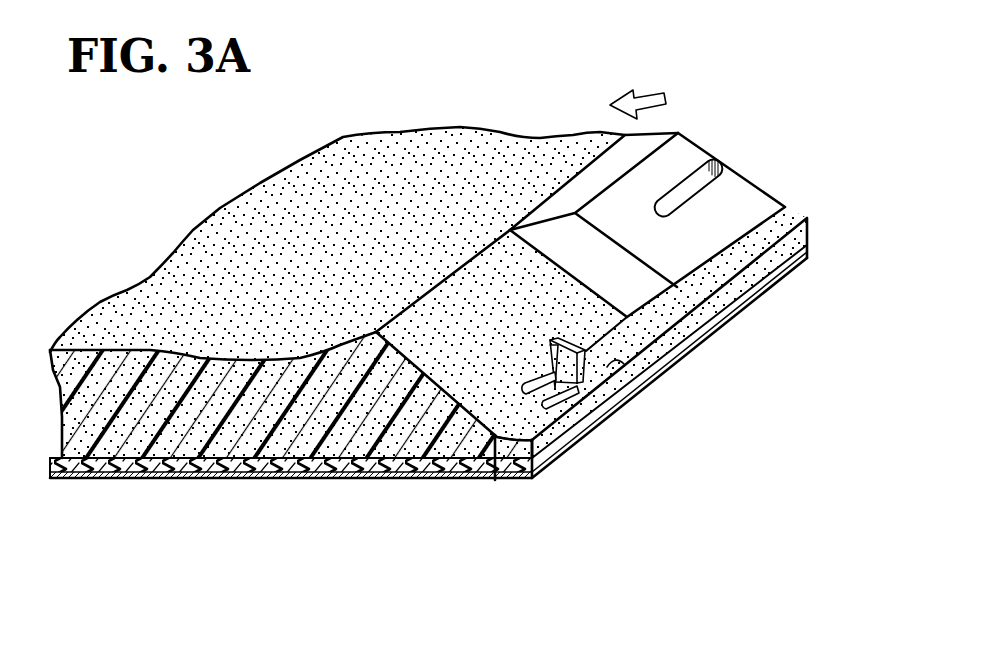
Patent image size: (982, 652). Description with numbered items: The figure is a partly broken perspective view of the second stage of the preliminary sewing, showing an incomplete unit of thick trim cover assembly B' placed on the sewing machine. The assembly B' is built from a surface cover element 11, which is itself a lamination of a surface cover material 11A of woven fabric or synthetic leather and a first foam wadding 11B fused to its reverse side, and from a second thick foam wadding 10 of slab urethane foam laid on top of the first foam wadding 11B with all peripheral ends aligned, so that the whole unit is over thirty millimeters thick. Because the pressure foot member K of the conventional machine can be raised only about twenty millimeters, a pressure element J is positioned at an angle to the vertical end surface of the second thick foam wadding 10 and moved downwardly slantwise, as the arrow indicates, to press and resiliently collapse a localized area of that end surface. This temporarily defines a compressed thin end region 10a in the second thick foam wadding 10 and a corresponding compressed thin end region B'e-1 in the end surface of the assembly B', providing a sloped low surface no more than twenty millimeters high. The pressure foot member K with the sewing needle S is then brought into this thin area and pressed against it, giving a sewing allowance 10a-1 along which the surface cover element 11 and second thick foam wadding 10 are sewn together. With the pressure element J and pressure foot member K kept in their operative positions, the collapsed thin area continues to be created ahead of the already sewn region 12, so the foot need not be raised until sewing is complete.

The second thick foam wadding 10 is at (72, 416).
The compressed thin end region 10a is at (462, 392).
The sewing allowance 10a-1 is at (624, 364).
The surface cover element 11 is at (357, 538).
The surface cover material 11A is at (255, 478).
The first foam wadding 11B is at (335, 478).
The already sewn region 12 is at (497, 480).
The incomplete unit of thick trim cover assembly B' is at (337, 243).
The compressed thin end region B'e-1 is at (500, 189).
The pressure element J is at (687, 153).
The sewing needle S is at (548, 350).
The pressure foot member K is at (585, 395).